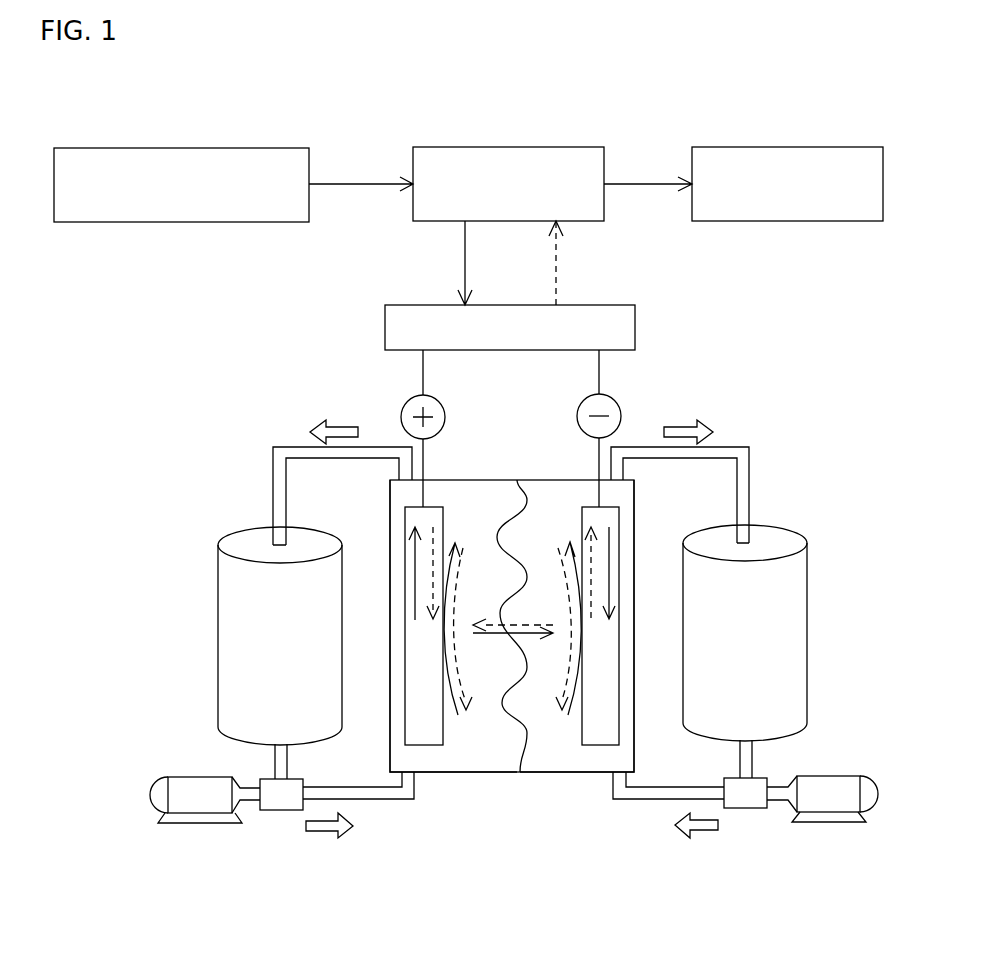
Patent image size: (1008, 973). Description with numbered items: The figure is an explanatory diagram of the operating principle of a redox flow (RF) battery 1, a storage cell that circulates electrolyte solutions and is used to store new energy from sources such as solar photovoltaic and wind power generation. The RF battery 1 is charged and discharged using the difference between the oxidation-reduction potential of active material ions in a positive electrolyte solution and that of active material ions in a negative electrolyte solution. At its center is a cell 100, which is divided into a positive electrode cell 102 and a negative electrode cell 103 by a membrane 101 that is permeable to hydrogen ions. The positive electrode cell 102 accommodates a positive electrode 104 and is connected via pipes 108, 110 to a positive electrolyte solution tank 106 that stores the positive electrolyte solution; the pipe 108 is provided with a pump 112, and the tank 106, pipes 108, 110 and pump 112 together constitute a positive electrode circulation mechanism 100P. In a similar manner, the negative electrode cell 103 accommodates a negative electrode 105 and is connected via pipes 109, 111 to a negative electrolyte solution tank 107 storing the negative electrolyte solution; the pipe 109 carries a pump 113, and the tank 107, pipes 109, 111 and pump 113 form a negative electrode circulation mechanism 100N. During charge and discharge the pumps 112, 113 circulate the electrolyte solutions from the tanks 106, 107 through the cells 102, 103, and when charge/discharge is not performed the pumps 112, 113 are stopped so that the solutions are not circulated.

The RF battery 1 is at (787, 383).
The cell 100 is at (583, 862).
The positive electrode circulation mechanism 100P is at (232, 832).
The negative electrode circulation mechanism 100N is at (797, 832).
The membrane 101 is at (524, 760).
The positive electrode cell 102 is at (455, 776).
The negative electrode cell 103 is at (574, 776).
The positive electrode 104 is at (403, 737).
The negative electrode 105 is at (620, 735).
The positive electrolyte solution tank 106 is at (237, 537).
The negative electrolyte solution tank 107 is at (788, 535).
The pipe 108 is at (382, 797).
The pipe 109 is at (650, 798).
The pipe 110 is at (289, 445).
The pipe 111 is at (733, 446).
The pump 112 is at (183, 777).
The pump 113 is at (842, 773).